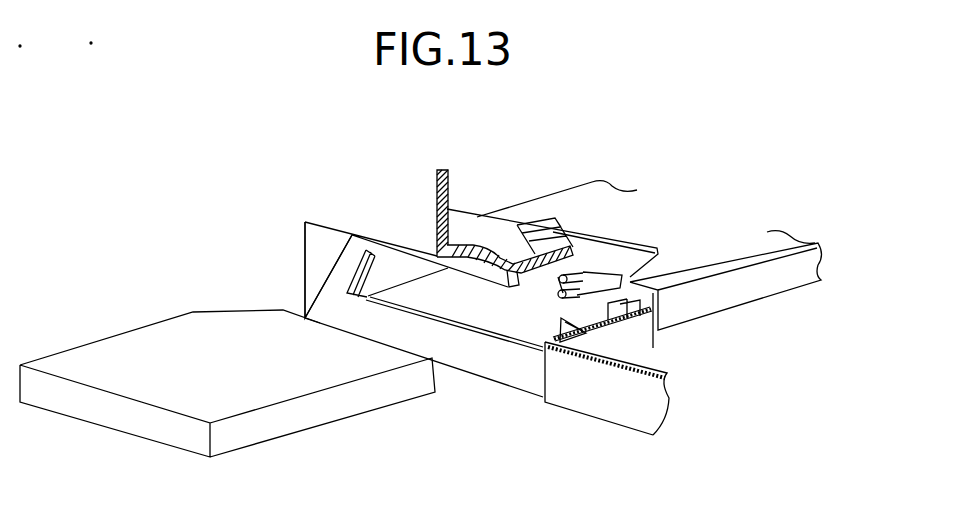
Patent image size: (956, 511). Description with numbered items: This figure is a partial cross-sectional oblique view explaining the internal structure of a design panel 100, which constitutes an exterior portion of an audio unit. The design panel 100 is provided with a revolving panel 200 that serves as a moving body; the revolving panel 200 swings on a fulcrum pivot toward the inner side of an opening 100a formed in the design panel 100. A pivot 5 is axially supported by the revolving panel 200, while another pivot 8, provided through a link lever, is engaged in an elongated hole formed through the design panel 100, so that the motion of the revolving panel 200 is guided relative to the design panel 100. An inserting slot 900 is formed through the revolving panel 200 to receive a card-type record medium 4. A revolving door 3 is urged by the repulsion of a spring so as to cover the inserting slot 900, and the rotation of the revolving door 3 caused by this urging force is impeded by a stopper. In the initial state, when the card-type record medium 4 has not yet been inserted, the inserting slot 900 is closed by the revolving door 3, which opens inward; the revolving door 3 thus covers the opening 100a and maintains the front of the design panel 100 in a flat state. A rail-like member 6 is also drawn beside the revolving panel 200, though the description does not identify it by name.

The card-type record medium 4 is at (143, 342).
The revolving panel 200 is at (510, 372).
The opening 100a is at (305, 257).
The inserting slot 900 is at (381, 267).
The design panel 100 is at (437, 157).
The revolving door 3 is at (578, 268).
The pivot 5 is at (577, 300).
The pivot 8 is at (630, 277).
The rail 6 is at (769, 285).